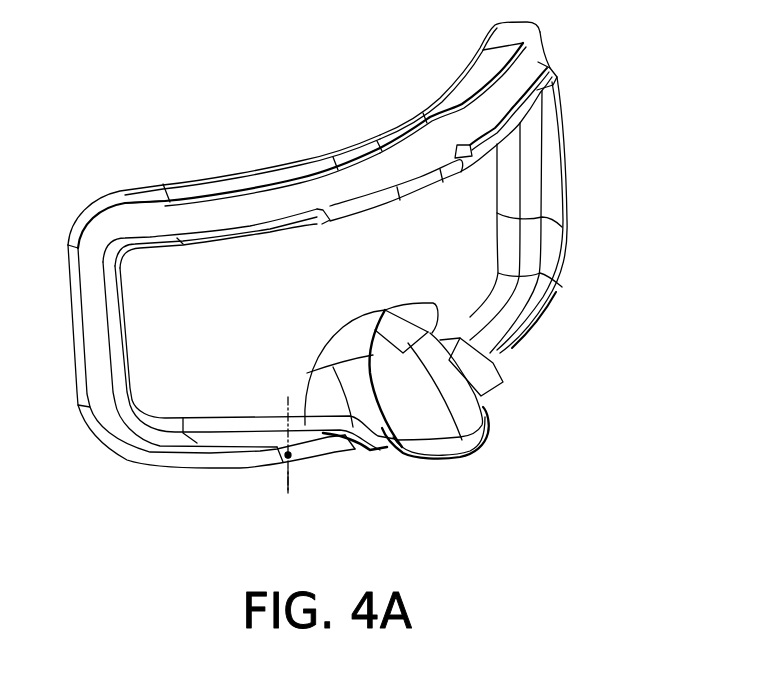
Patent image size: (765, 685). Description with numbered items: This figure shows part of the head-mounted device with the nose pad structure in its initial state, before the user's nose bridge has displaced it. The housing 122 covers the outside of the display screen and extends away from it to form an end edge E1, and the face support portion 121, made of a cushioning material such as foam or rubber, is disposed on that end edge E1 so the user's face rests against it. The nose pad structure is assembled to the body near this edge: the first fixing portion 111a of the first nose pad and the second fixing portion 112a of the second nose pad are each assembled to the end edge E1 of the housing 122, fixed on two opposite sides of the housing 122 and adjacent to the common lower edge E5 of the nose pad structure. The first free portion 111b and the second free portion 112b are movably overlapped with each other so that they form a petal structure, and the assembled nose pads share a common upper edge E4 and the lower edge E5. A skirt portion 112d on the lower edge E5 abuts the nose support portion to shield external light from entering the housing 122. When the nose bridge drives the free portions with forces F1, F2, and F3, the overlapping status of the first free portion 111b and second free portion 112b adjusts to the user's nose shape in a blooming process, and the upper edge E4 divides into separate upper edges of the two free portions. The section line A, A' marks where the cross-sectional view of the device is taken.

The face support portion 121 is at (466, 73).
The housing 122 is at (162, 457).
The first fixing portion 111a is at (500, 367).
The first free portion 111b is at (467, 407).
The second fixing portion 112a is at (338, 455).
The second free portion 112b is at (378, 410).
The skirt portion 112d is at (493, 443).
The end edge E1 is at (136, 203).
The upper edge E4 is at (385, 311).
The lower edge E5 is at (455, 462).
The force F1 is at (424, 333).
The force F2 is at (400, 302).
The force F3 is at (372, 308).
The section line A-A' A is at (309, 438).
The section line A- A' is at (314, 490).